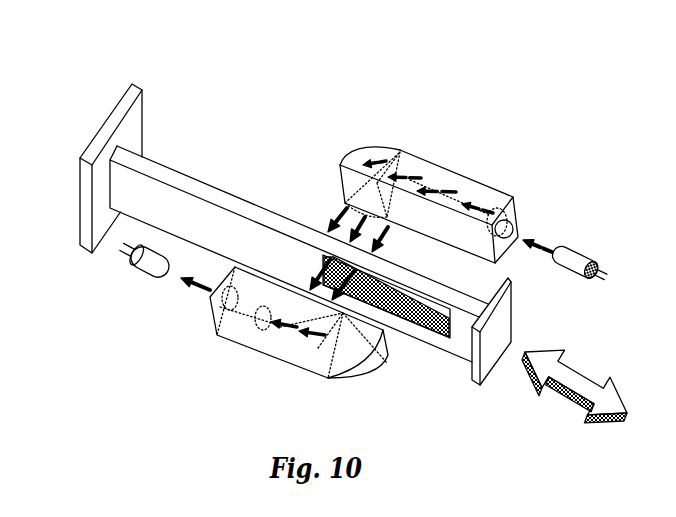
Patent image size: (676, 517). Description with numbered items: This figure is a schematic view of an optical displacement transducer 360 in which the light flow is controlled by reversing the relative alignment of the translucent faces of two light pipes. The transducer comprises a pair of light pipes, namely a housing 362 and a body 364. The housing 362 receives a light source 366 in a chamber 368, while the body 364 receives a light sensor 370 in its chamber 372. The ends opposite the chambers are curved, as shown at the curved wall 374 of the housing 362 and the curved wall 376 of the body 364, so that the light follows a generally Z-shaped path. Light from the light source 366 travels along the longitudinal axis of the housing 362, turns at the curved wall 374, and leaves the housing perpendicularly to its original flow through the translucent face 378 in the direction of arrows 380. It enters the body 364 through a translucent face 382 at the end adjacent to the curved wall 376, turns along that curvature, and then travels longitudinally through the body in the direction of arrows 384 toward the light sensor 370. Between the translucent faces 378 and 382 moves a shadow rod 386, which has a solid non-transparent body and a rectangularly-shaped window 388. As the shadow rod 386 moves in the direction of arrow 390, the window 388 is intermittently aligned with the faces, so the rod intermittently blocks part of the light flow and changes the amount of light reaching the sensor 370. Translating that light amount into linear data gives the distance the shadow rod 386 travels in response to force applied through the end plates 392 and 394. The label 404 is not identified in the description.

The optical displacement transducer 360 is at (318, 120).
The housing 362 is at (457, 170).
The body 364 is at (268, 357).
The light source 366 is at (580, 248).
The chamber 368 is at (508, 226).
The light sensor 370 is at (138, 268).
The chamber 372 is at (217, 304).
The curved wall 374 is at (378, 153).
The curved wall 376 is at (349, 374).
The translucent face 378 is at (350, 183).
The arrows 380 is at (388, 238).
The translucent face 382 is at (385, 348).
The arrows 384 is at (277, 325).
The shadow rod 386 is at (177, 168).
The rectangularly-shaped window 388 is at (423, 308).
The arrow 390 is at (583, 378).
The end plate 392 is at (85, 134).
The end plate 394 is at (510, 315).
The sheet annotation 404 is at (117, 505).